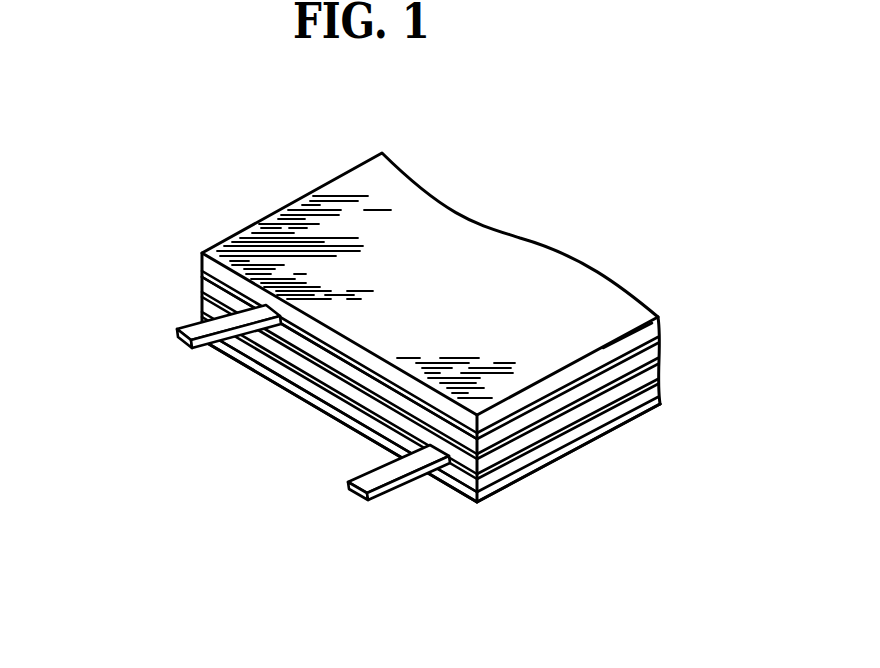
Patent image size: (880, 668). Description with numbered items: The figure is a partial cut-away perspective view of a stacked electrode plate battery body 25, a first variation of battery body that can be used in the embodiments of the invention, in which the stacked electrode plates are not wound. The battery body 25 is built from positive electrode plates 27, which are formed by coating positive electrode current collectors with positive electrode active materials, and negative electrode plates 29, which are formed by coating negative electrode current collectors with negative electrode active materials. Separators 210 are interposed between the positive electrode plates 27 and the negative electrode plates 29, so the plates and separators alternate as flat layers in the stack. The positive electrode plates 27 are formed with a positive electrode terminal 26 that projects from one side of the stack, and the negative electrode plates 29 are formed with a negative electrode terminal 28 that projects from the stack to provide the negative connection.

The stacked electrode plate battery body 25 is at (150, 223).
The positive electrode terminal 26 is at (175, 345).
The positive electrode plate 27 is at (290, 368).
The separator 210 is at (337, 408).
The negative electrode terminal 28 is at (351, 492).
The negative electrode plate 29 is at (465, 478).